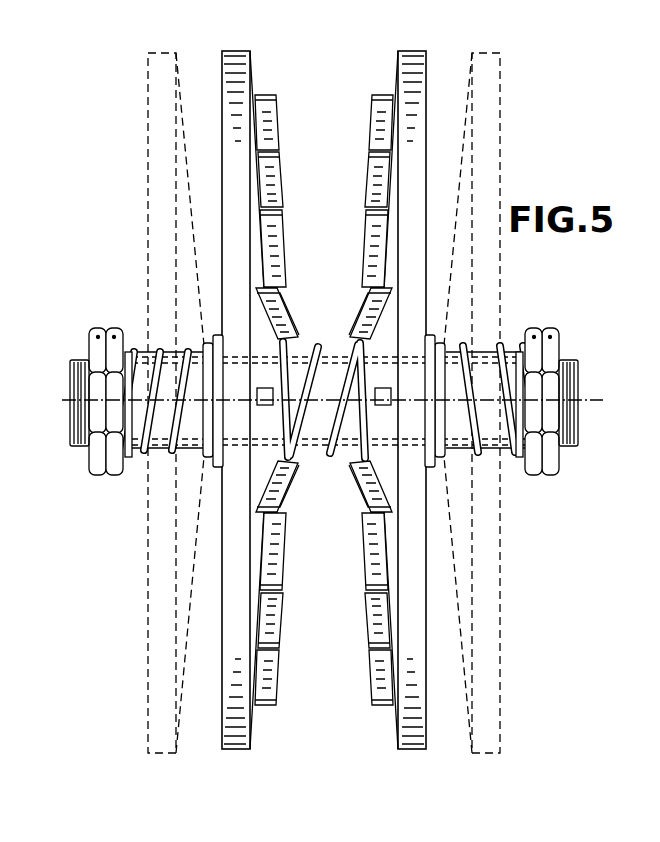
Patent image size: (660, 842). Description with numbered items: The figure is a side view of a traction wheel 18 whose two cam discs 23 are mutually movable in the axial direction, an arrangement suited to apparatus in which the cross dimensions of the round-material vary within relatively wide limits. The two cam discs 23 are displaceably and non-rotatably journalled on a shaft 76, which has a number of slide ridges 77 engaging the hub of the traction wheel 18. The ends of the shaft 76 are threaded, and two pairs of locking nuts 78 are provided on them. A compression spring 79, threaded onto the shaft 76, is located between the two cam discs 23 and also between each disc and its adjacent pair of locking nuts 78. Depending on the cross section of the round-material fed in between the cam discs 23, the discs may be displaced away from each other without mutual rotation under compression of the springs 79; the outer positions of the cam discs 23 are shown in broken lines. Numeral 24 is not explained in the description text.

The traction wheel 18 is at (346, 100).
The cam discs 23 is at (158, 673).
The belt engaging segments 24 is at (377, 637).
The shaft 76 is at (70, 436).
The slide ridges 77 is at (160, 452).
The locking nuts 78 is at (114, 337).
The compression spring 79 is at (157, 353).